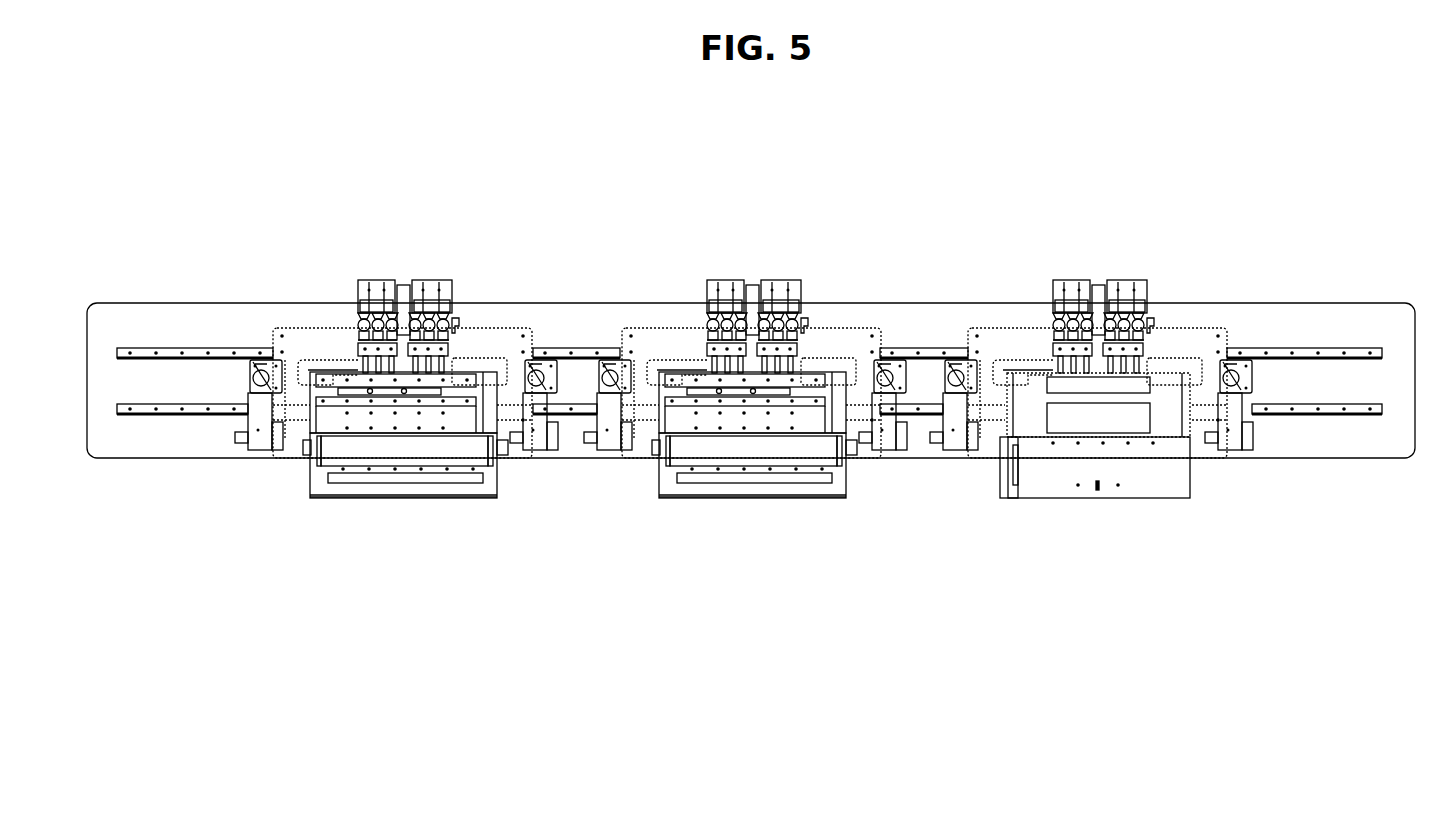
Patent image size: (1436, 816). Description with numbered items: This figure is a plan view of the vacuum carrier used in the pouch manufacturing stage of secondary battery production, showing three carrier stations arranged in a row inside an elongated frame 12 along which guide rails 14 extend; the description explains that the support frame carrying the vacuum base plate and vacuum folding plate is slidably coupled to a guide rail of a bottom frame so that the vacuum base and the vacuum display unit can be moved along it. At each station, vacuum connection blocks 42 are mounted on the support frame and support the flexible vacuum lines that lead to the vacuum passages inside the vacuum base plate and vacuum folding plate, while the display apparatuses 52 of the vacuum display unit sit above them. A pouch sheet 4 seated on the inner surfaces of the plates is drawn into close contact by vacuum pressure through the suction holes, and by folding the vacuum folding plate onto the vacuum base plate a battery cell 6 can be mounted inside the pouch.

The pouch sheet 4 is at (312, 430).
The battery cell 6 is at (383, 452).
The frame 12 is at (1347, 483).
The guide rail 14 is at (1332, 353).
The vacuum connection blocks 42 is at (355, 345).
The display apparatuses 52 is at (355, 327).